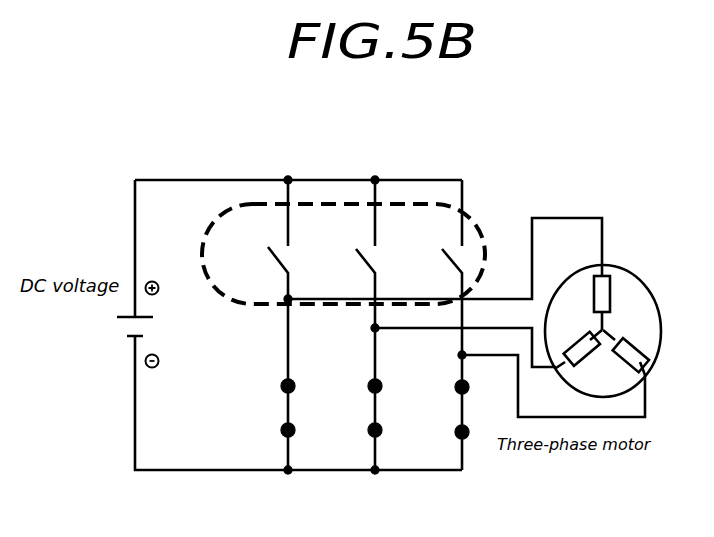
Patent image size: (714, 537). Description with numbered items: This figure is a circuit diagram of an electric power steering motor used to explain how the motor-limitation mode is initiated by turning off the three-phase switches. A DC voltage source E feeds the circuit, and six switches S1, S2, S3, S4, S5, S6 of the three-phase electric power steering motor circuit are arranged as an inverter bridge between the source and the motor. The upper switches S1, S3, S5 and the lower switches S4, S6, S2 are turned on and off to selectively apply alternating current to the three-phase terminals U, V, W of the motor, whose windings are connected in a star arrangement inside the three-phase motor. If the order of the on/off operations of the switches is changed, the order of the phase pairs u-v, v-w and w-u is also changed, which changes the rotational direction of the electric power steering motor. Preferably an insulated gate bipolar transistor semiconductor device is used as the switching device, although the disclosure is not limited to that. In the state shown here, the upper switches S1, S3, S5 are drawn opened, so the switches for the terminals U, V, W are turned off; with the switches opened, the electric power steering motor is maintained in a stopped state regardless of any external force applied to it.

The switch S1 is at (262, 239).
The switch S2 is at (436, 412).
The switch S3 is at (350, 254).
The switch S4 is at (263, 386).
The switch S5 is at (435, 269).
The switch S6 is at (351, 401).
The DC voltage source E is at (145, 325).
The three-phase terminal U is at (595, 283).
The three-phase terminal V is at (571, 364).
The three-phase terminal W is at (638, 364).